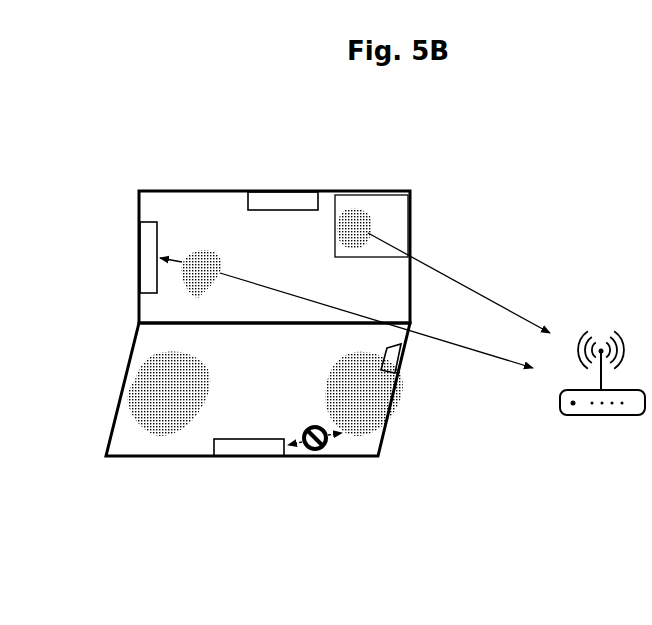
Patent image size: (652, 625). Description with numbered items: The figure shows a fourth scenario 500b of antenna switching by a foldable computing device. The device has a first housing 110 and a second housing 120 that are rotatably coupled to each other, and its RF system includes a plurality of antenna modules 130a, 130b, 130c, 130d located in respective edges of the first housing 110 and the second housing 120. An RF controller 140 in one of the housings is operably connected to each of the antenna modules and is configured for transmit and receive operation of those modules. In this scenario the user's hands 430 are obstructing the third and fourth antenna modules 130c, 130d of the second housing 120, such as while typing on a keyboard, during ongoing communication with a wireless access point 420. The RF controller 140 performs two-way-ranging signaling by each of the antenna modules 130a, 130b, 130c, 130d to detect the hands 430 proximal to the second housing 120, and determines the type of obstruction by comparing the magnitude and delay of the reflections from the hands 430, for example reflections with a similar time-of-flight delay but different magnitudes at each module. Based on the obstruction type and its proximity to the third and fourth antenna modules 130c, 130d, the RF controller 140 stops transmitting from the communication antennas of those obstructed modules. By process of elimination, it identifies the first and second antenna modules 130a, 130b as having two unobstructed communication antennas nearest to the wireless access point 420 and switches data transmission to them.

The fourth scenario 500b is at (553, 87).
The first housing 110 is at (336, 279).
The second housing 120 is at (258, 389).
The first antenna module 130a is at (322, 206).
The second antenna module 130b is at (146, 253).
The third antenna module 130c is at (255, 445).
The fourth antenna module 130d is at (392, 360).
The RF controller 140 is at (402, 227).
The wireless access point 420 is at (600, 416).
The user's hands 430 is at (264, 394).